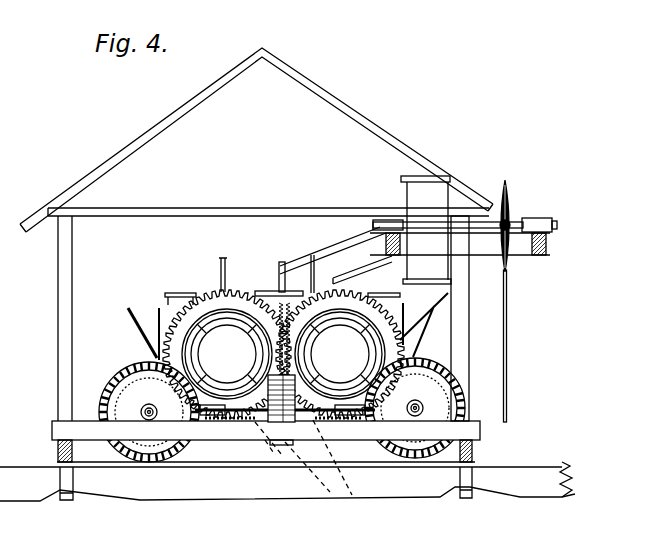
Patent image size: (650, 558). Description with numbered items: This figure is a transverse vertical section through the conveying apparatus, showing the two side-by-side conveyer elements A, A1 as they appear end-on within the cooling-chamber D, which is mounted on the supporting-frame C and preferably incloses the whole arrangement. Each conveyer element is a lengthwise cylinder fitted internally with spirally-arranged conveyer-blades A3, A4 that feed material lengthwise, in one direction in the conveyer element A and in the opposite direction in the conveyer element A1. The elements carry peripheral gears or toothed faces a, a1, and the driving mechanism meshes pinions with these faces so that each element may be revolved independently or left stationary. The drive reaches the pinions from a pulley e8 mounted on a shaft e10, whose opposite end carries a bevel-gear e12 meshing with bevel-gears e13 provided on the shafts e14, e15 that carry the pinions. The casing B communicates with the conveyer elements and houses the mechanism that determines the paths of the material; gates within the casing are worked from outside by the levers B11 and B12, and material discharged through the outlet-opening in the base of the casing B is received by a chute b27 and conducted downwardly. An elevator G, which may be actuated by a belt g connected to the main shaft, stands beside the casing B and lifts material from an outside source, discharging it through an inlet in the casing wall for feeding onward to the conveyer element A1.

The cooling-chamber D is at (152, 249).
The supporting-frame C is at (478, 443).
The elevator G is at (443, 318).
The belt g is at (508, 332).
The casing B is at (176, 293).
The lever B12 is at (368, 282).
The lever B11 is at (438, 300).
The peripheral gear or toothed face a1 is at (160, 339).
The peripheral gear or toothed face a is at (393, 343).
The conveyer element A1 is at (192, 353).
The spirally-arranged conveyer-blade A4 is at (218, 388).
The conveyer element A is at (360, 352).
The spirally-arranged conveyer-blade A3 is at (353, 362).
The pulley e8 is at (283, 445).
The shaft e10 is at (322, 415).
The bevel-gear e12 is at (368, 474).
The bevel-gear e13 is at (478, 370).
The shaft e14 is at (415, 416).
The shaft e15 is at (149, 418).
The chute b27 is at (340, 503).